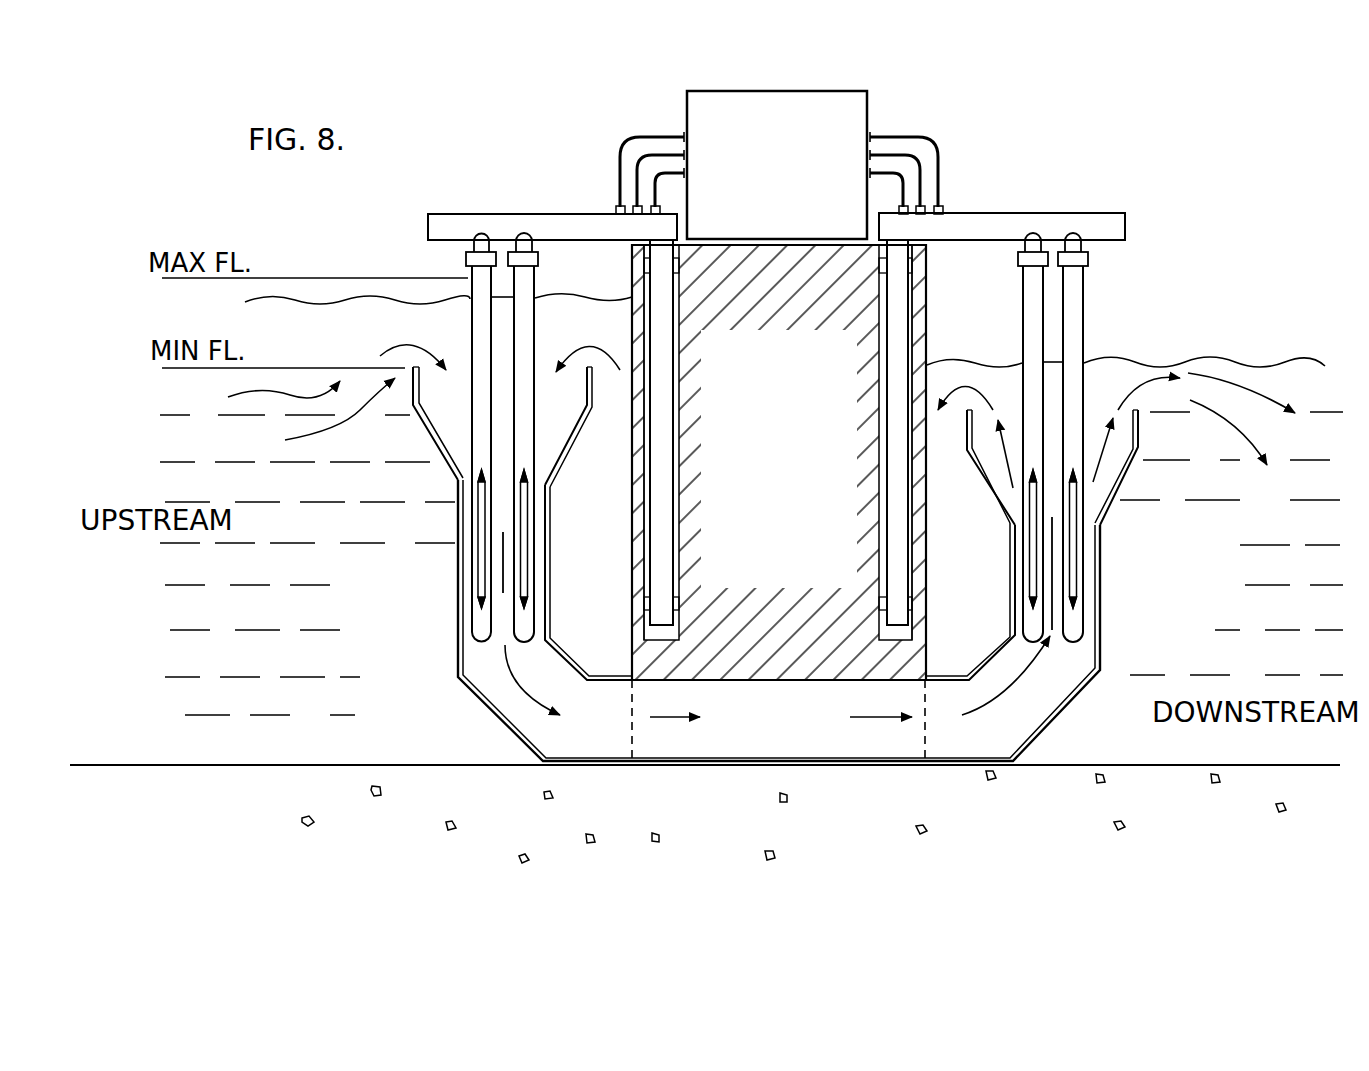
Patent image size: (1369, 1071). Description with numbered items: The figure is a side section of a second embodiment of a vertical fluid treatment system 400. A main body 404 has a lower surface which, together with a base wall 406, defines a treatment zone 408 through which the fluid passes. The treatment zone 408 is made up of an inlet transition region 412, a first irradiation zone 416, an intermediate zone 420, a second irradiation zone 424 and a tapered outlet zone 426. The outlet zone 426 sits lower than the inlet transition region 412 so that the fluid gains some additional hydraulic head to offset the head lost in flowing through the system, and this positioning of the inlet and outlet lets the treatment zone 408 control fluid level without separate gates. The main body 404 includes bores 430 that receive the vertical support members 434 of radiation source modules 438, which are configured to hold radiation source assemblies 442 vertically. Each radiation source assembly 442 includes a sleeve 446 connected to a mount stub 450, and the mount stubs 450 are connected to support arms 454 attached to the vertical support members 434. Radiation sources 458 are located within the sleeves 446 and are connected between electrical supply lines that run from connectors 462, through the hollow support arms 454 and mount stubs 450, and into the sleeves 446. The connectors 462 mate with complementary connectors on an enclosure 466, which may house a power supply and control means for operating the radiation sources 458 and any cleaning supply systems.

The treatment system 400 is at (1068, 114).
The main body 404 is at (805, 486).
The base wall 406 is at (468, 690).
The treatment zone 408 is at (560, 600).
The inlet transition region 412 is at (553, 415).
The first irradiation zone 416 is at (503, 568).
The intermediate zone 420 is at (805, 738).
The second irradiation zone 424 is at (1052, 562).
The tapered outlet zone 426 is at (1100, 408).
The bores 430 is at (687, 440).
The vertical support members 434 is at (667, 364).
The radiation source modules 438 is at (552, 213).
The radiation source assemblies 442 is at (540, 306).
The sleeves 446 is at (468, 632).
The mount stubs 450 is at (521, 250).
The support arms 454 is at (447, 226).
The radiation sources 458 is at (478, 574).
The connectors 462 is at (648, 130).
The enclosure 466 is at (783, 90).